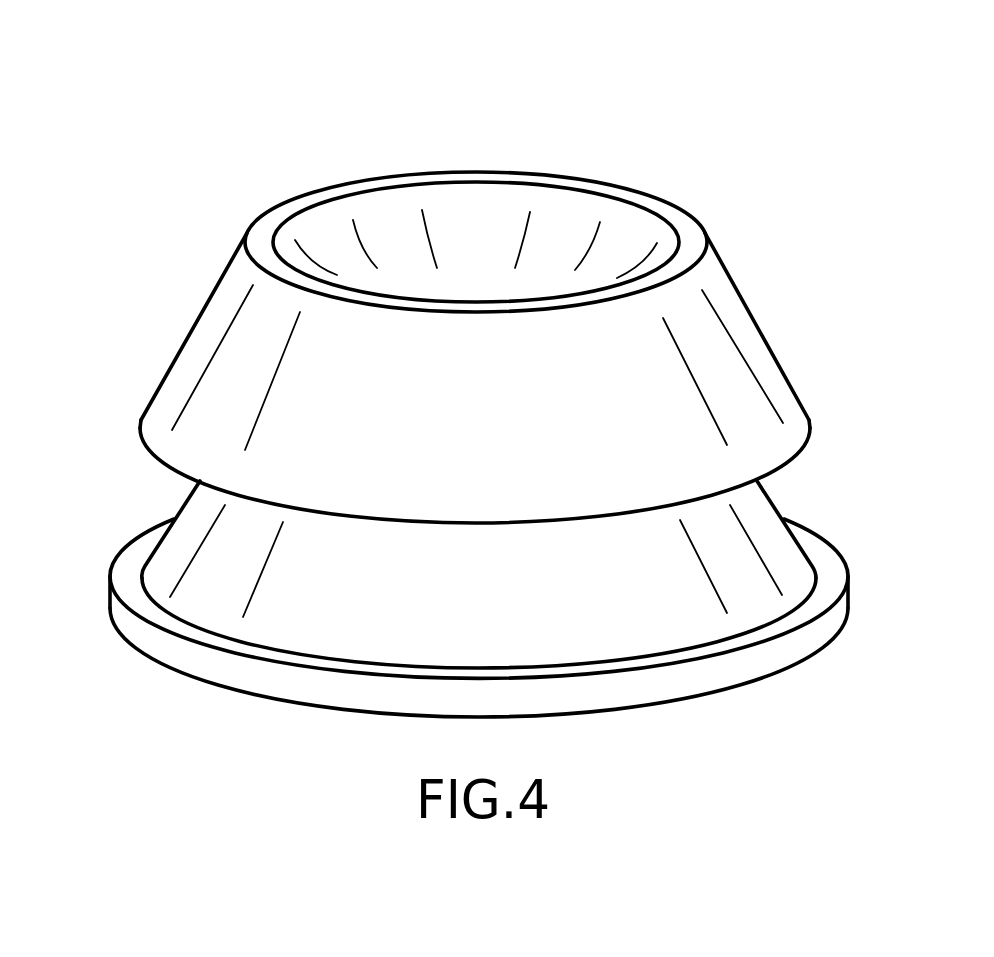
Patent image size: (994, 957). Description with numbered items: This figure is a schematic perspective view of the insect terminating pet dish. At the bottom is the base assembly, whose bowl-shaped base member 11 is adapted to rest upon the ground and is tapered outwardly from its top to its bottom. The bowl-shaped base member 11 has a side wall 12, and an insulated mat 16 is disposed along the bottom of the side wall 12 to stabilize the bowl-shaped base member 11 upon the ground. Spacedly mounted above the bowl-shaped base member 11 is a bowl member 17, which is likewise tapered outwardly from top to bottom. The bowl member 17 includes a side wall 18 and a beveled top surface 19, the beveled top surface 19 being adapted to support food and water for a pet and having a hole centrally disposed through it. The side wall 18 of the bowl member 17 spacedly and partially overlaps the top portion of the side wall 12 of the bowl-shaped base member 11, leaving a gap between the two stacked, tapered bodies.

The bowl-shaped base member 11 is at (763, 493).
The side wall 12 is at (200, 527).
The insulated mat 16 is at (782, 670).
The bowl member 17 is at (752, 323).
The side wall 18 is at (202, 317).
The beveled top surface 19 is at (490, 212).